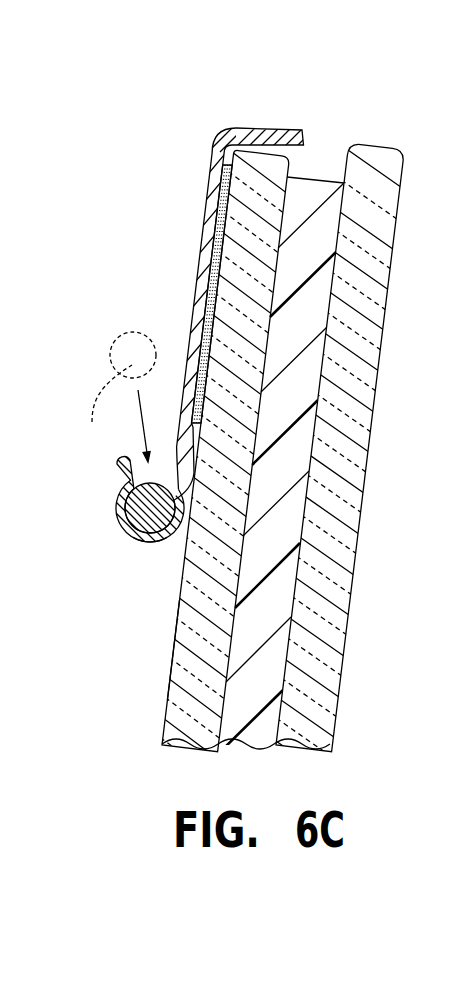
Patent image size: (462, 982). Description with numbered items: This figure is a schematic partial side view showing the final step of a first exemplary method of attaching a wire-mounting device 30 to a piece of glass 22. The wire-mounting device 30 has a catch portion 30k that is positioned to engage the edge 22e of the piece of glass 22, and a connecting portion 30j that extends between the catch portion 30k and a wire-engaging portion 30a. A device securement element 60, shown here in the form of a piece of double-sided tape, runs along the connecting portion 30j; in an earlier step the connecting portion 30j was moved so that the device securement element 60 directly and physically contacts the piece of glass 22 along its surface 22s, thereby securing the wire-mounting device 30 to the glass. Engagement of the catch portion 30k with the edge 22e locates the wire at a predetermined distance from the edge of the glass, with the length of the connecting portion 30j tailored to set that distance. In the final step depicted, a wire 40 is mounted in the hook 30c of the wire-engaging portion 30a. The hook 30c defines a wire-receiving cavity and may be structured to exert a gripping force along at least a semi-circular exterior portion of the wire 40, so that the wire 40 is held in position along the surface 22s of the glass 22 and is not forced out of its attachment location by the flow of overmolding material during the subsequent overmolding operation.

The piece of glass 22 is at (377, 137).
The edge of the piece of glass 22e is at (264, 129).
The surface of the glass 22s is at (175, 638).
The wire-mounting device 30 is at (215, 127).
The connecting portion 30j is at (202, 232).
The catch portion 30k is at (243, 128).
The hook 30c is at (124, 532).
The wire-engaging portion 30a is at (136, 550).
The wire 40 is at (122, 482).
The device securement element 60 is at (208, 297).